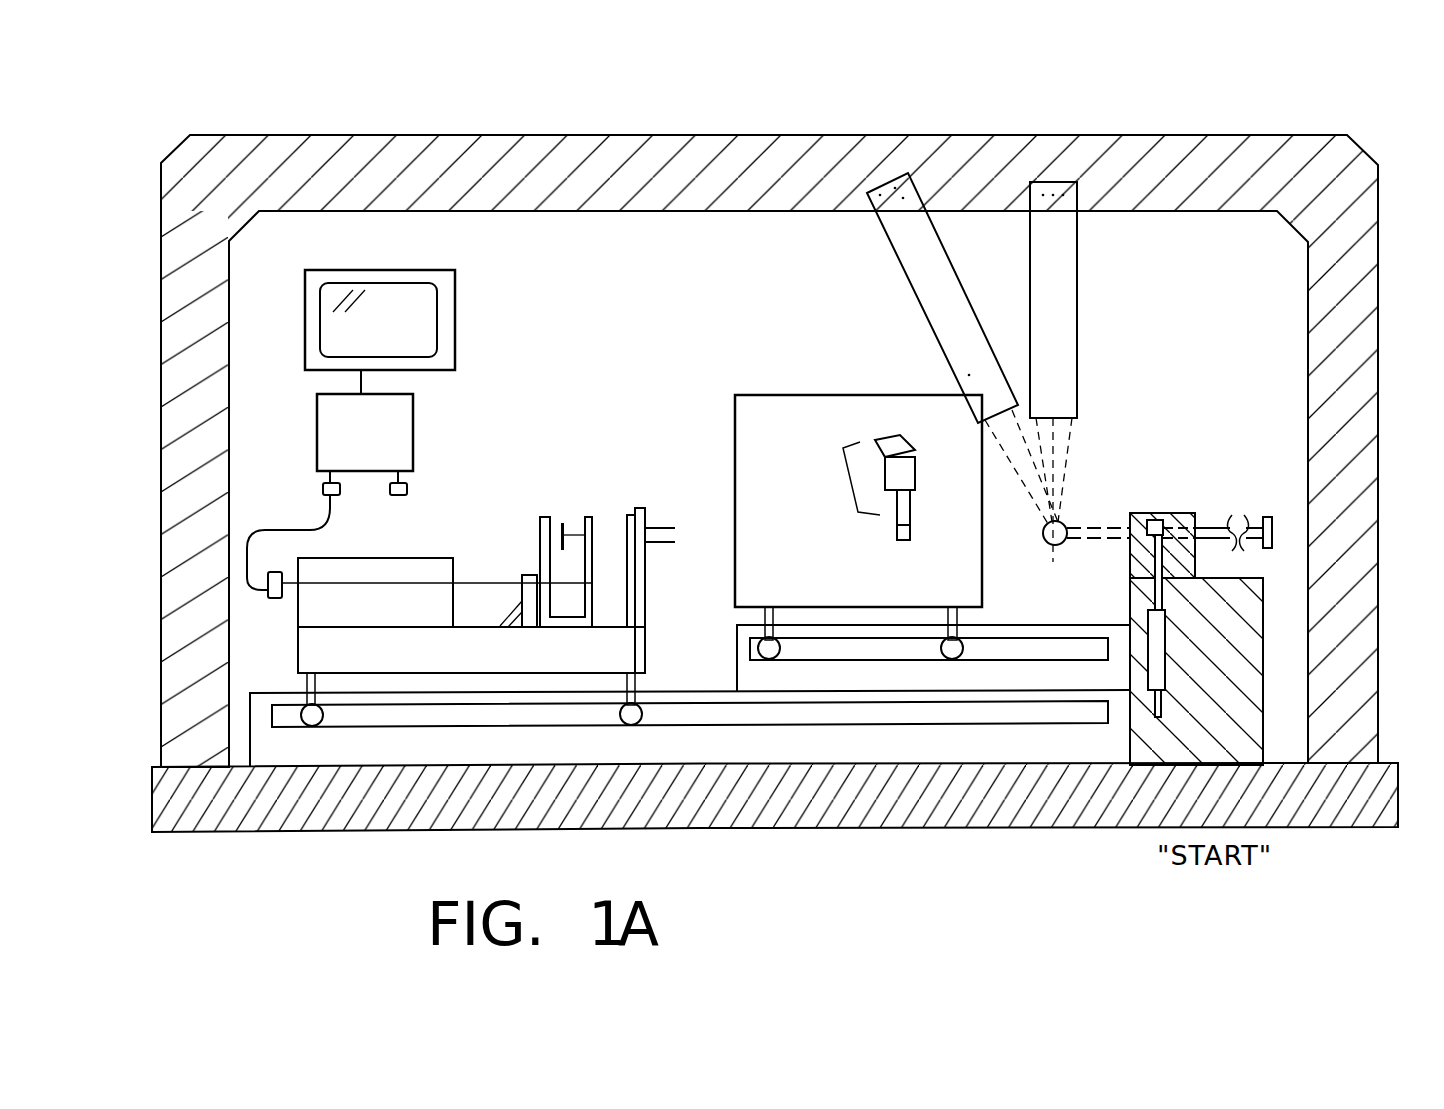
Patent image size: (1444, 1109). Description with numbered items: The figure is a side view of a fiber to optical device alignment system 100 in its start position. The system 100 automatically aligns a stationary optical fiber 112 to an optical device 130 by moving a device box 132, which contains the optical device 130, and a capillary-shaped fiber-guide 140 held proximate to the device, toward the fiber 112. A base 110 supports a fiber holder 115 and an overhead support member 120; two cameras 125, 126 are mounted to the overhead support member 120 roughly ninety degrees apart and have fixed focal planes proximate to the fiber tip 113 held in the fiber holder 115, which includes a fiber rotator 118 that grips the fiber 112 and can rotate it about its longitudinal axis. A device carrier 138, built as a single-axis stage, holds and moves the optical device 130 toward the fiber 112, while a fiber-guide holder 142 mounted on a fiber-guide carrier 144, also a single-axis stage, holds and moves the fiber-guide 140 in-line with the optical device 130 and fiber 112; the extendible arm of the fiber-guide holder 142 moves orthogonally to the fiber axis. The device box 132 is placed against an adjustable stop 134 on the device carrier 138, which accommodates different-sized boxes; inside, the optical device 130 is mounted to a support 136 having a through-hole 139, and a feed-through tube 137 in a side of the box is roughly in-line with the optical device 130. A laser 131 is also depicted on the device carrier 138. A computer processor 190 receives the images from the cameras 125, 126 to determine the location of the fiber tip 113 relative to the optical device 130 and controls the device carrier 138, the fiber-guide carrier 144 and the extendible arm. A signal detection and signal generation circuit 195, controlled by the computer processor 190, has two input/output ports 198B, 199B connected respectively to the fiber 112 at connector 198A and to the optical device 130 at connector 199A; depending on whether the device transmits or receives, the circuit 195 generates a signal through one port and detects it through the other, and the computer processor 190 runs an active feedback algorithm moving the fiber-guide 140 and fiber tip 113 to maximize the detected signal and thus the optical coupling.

The fiber to optical device alignment system 100 is at (322, 106).
The base 110 is at (818, 827).
The optical fiber 112 is at (1200, 522).
The fiber tip 113 is at (1068, 525).
The fiber holder 115 is at (1263, 610).
The fiber rotator 118 is at (1147, 515).
The overhead support member 120 is at (593, 135).
The camera 125 is at (897, 263).
The camera 126 is at (1117, 268).
The optical device 130 is at (521, 542).
The laser source 131 is at (330, 588).
The device box 132 is at (538, 530).
The adjustable stop 134 is at (522, 577).
The support 136 is at (583, 517).
The feed-through tube 137 is at (658, 528).
The device carrier 138 is at (298, 652).
The through-hole 139 is at (589, 547).
The fiber-guide 140 is at (890, 532).
The fiber-guide holder 142 is at (853, 488).
The fiber-guide carrier 144 is at (735, 448).
The computer processor 190 is at (455, 330).
The signal detection and signal generation circuit 195 is at (413, 432).
The connector 198A is at (1278, 530).
The input/output port 198B is at (397, 496).
The connector 199A is at (265, 590).
The input/output port 199B is at (322, 490).